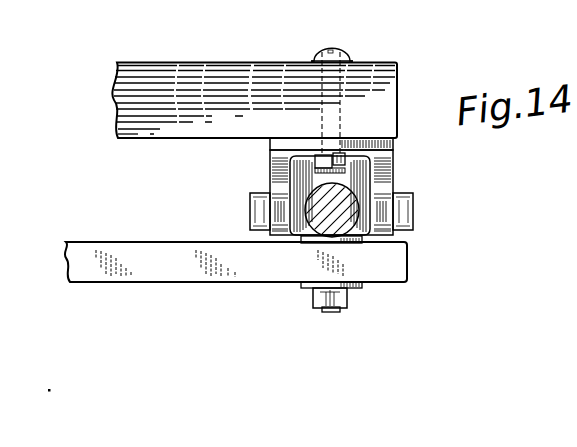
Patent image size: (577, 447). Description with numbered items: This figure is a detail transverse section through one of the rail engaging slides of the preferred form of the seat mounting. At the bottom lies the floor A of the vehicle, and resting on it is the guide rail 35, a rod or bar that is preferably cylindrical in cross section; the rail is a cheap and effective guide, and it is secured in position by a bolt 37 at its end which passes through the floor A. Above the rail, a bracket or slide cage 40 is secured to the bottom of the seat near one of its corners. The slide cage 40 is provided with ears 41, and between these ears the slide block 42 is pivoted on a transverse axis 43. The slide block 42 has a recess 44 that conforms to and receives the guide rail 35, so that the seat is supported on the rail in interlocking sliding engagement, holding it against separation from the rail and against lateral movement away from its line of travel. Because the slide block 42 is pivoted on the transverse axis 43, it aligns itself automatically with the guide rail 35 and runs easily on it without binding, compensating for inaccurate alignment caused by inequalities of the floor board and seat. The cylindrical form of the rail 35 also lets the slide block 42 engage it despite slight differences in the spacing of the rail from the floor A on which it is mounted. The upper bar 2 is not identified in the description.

The upper bar 2 is at (217, 72).
The slide cage 40 is at (397, 143).
The ears 41 is at (395, 172).
The slide block 42 is at (393, 184).
The transverse axis 43 is at (252, 217).
The recess 44 is at (312, 216).
The guide rail 35 is at (365, 241).
The bolt 37 is at (340, 310).
The floor A is at (165, 282).